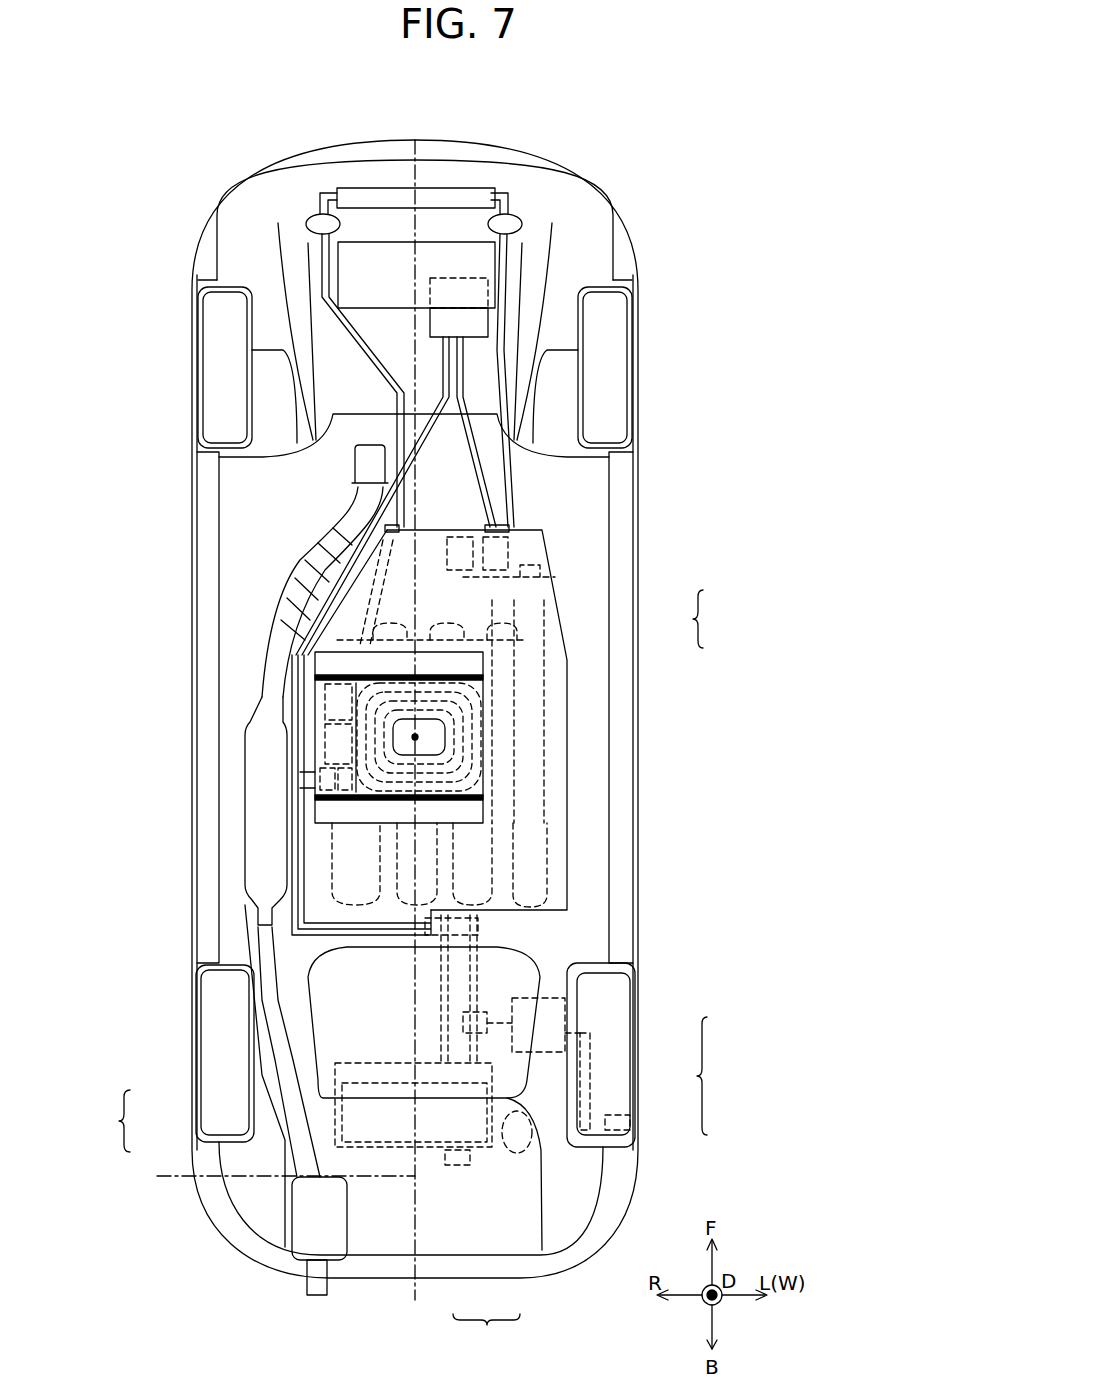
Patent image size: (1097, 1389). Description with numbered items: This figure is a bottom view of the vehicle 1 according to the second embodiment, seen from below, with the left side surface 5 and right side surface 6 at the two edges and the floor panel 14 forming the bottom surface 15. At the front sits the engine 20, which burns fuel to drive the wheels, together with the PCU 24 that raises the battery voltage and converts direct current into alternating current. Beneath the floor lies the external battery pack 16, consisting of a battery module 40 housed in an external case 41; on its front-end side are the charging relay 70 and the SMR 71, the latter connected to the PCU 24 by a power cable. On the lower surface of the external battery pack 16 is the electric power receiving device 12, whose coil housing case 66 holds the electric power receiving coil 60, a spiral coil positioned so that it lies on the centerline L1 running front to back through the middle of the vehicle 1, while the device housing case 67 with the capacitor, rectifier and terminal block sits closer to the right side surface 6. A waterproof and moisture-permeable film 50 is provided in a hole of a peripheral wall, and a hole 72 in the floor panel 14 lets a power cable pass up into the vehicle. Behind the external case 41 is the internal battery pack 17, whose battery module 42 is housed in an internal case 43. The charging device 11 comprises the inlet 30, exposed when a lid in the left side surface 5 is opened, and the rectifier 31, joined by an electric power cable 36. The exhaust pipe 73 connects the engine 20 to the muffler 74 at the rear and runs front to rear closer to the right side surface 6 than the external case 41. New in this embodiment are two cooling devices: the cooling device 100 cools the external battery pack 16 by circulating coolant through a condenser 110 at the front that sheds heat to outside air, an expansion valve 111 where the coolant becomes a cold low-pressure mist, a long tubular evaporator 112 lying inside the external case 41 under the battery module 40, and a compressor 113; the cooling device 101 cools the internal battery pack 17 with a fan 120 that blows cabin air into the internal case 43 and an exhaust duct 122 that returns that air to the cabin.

The vehicle 1 is at (712, 229).
The cooling device 100 is at (562, 170).
The left side surface 5 is at (637, 858).
The right side surface 6 is at (192, 642).
The floor panel 14 is at (582, 463).
The bottom surface 15 is at (583, 486).
The engine 20 is at (482, 262).
The PCU 24 is at (482, 323).
The condenser 110 is at (473, 188).
The expansion valve 111 is at (521, 214).
The compressor 113 is at (314, 214).
The SMR 71 is at (510, 540).
The charging relay 70 is at (530, 573).
The external case 41 is at (556, 612).
The battery module 40 is at (560, 622).
The external battery pack 16 is at (522, 720).
The evaporator 112 is at (484, 660).
The device housing case 67 is at (470, 684).
The coil housing case 66 is at (482, 738).
The electric power receiving coil 60 is at (480, 758).
The electric power receiving device 12 is at (483, 790).
The hole 72 is at (431, 912).
The waterproof and moisture-permeable film 50 is at (345, 578).
The exhaust pipe 73 is at (268, 853).
The muffler 74 is at (308, 1218).
The rectifier 31 is at (567, 1022).
The electric power cable 36 is at (593, 1075).
The inlet 30 is at (620, 1130).
The charging device 11 is at (581, 1028).
The internal case 43 is at (335, 1104).
The battery module 42 is at (345, 1133).
The internal battery pack 17 is at (292, 1107).
The centerline L1 is at (273, 1172).
The fan 120 is at (520, 1153).
The exhaust duct 122 is at (452, 1165).
The cooling device 101 is at (488, 1228).